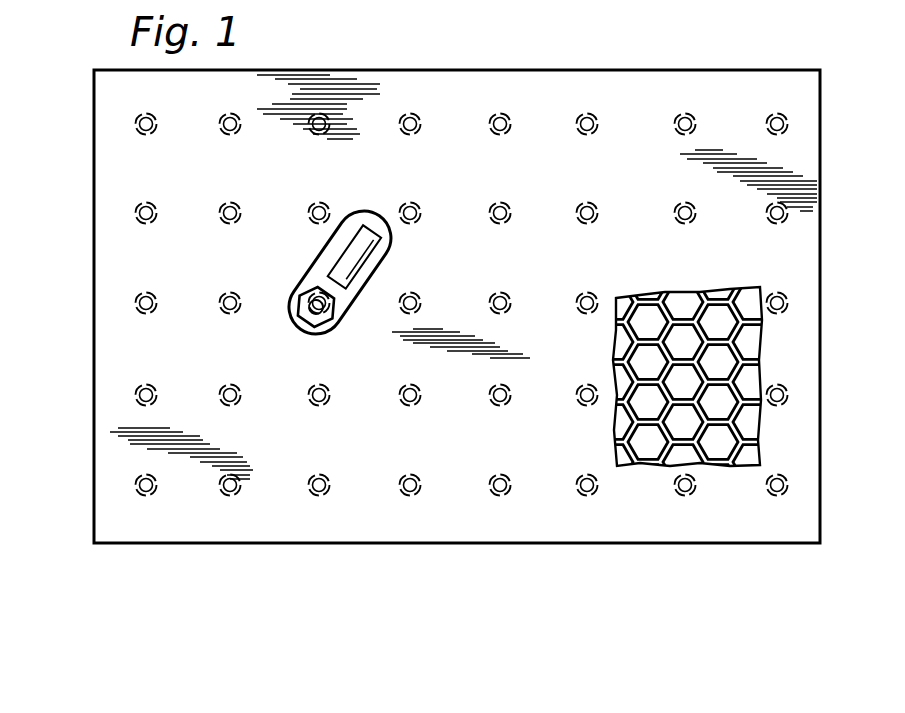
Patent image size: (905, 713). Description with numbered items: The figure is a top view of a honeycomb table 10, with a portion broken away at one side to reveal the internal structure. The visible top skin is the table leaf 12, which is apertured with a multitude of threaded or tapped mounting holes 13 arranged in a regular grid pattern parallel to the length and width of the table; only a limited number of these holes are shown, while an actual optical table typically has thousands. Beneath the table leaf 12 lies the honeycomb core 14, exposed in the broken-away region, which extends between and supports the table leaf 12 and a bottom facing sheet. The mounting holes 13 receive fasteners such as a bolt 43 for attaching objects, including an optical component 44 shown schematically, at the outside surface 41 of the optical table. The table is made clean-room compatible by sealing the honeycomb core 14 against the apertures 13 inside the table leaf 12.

The honeycomb table 10 is at (92, 367).
The table leaf 12 is at (104, 202).
The mounting holes 13 is at (223, 313).
The honeycomb core 14 is at (675, 395).
The outside surface 41 is at (460, 272).
The bolt 43 is at (315, 315).
The optical component 44 is at (317, 298).